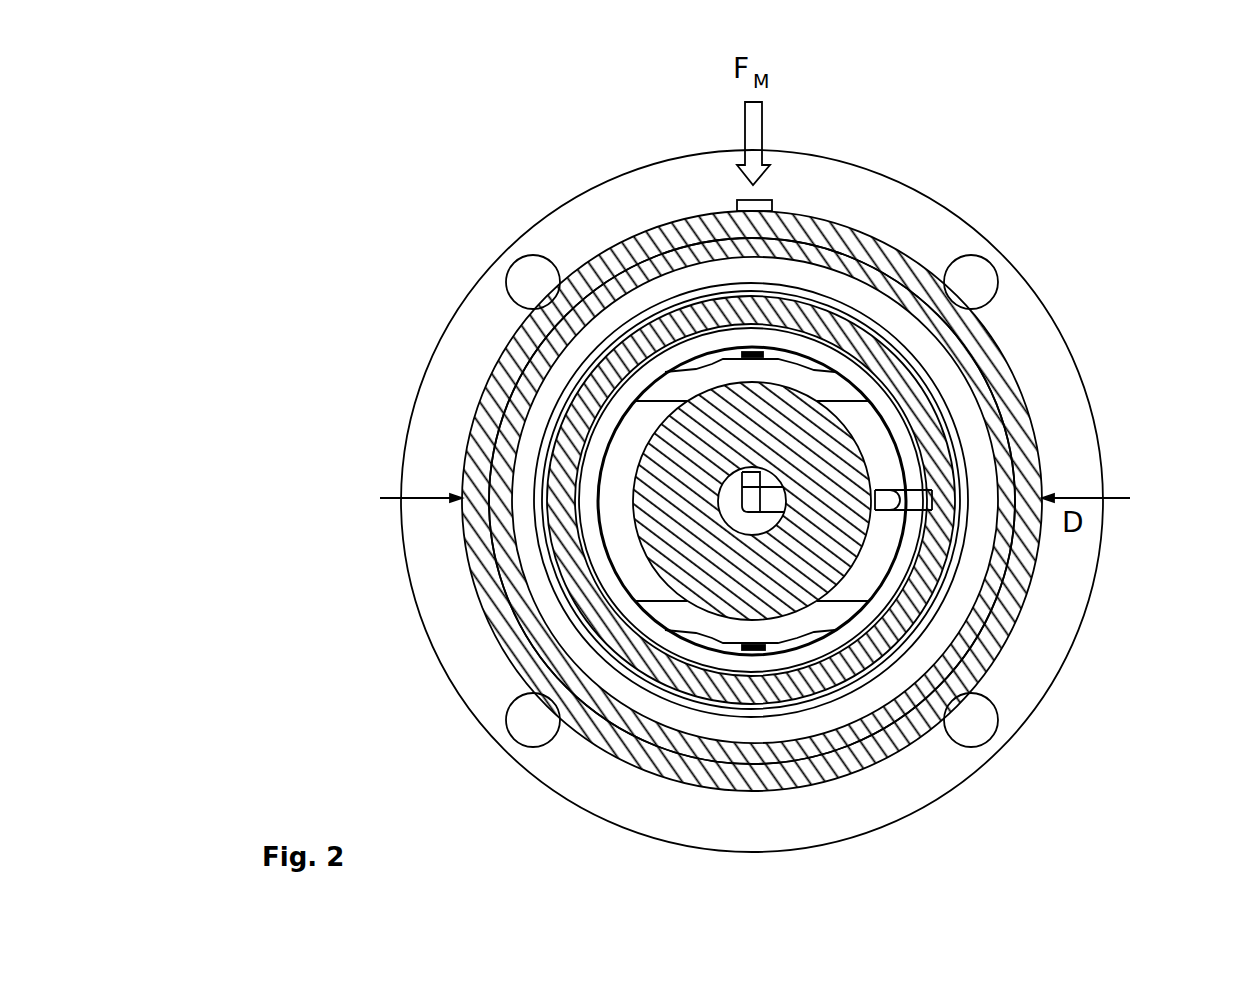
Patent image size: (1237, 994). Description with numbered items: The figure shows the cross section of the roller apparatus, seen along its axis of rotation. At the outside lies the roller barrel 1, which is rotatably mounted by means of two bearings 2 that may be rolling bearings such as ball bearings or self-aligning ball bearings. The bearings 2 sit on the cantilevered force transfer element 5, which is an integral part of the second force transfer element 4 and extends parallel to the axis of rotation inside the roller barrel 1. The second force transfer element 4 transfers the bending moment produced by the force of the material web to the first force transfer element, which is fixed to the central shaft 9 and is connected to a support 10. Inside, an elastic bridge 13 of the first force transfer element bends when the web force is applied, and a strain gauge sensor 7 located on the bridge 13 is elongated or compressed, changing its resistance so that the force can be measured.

The roller barrel 1 is at (868, 240).
The bearing 2 is at (862, 294).
The second force transfer element 4 is at (870, 500).
The cantilevered force transfer element 5 is at (855, 339).
The sensor 7 is at (752, 352).
The shaft 9 is at (815, 422).
The support 10 is at (630, 201).
The bridge 13 is at (772, 358).